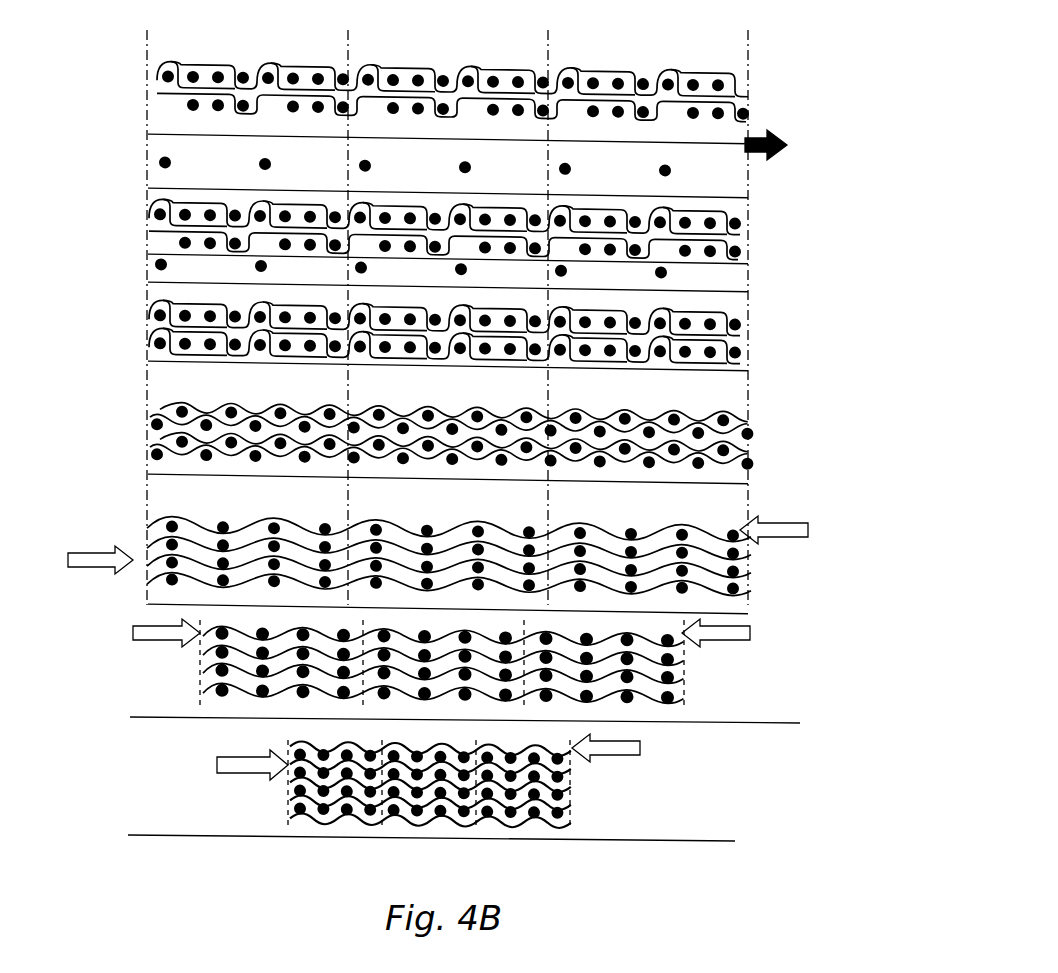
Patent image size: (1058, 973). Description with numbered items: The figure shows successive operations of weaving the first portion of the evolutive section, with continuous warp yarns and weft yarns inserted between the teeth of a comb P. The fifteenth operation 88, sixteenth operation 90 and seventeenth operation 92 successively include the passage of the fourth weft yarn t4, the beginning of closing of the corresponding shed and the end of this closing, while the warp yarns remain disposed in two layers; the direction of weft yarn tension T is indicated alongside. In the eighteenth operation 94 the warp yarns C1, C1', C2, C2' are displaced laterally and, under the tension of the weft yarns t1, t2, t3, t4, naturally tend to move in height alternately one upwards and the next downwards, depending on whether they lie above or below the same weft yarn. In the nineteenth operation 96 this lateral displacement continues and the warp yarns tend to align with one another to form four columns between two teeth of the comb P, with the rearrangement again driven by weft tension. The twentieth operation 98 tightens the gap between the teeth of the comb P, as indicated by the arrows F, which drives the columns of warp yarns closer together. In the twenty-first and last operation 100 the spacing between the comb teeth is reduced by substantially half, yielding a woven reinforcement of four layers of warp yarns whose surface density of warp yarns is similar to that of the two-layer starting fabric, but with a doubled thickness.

The fifteenth operation 88 is at (125, 106).
The sixteenth operation 90 is at (122, 224).
The seventeenth operation 92 is at (118, 326).
The eighteenth operation 94 is at (113, 438).
The nineteenth operation 96 is at (110, 540).
The twentieth operation 98 is at (108, 662).
The twenty-first operation 100 is at (103, 778).
The comb P is at (774, 14).
The weft yarn tension T is at (780, 145).
The arrows indicating tightening F is at (436, 648).
The first warp yarn C1 is at (482, 545).
The first auxiliary warp yarn C1' is at (506, 538).
The second warp yarn C2 is at (482, 588).
The second auxiliary warp yarn C2' is at (503, 593).
The first weft yarn t1 is at (706, 553).
The second weft yarn t2 is at (742, 530).
The third weft yarn t3 is at (742, 582).
The fourth weft yarn t4 is at (712, 144).